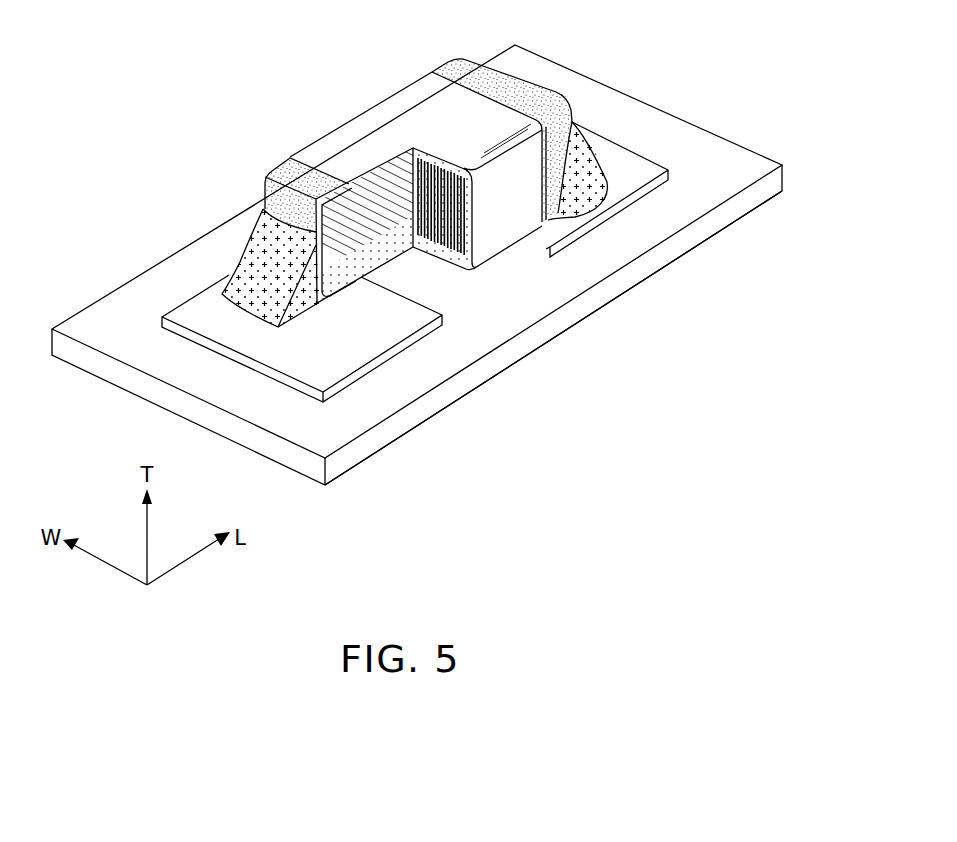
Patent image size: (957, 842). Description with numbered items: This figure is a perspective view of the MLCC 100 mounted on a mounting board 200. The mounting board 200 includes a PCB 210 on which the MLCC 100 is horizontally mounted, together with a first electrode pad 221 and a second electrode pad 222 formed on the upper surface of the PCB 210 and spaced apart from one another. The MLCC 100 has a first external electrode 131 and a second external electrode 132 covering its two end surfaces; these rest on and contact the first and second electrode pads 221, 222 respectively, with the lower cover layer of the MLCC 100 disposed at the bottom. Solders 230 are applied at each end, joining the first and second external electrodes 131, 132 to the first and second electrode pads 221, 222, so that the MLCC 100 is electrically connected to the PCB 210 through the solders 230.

The MLCC 100 is at (388, 151).
The first external electrode 131 is at (288, 170).
The second external electrode 132 is at (450, 76).
The mounting board 200 is at (607, 315).
The PCB 210 is at (552, 328).
The first electrode pad 221 is at (370, 342).
The second electrode pad 222 is at (620, 180).
The solders 230 is at (250, 255).